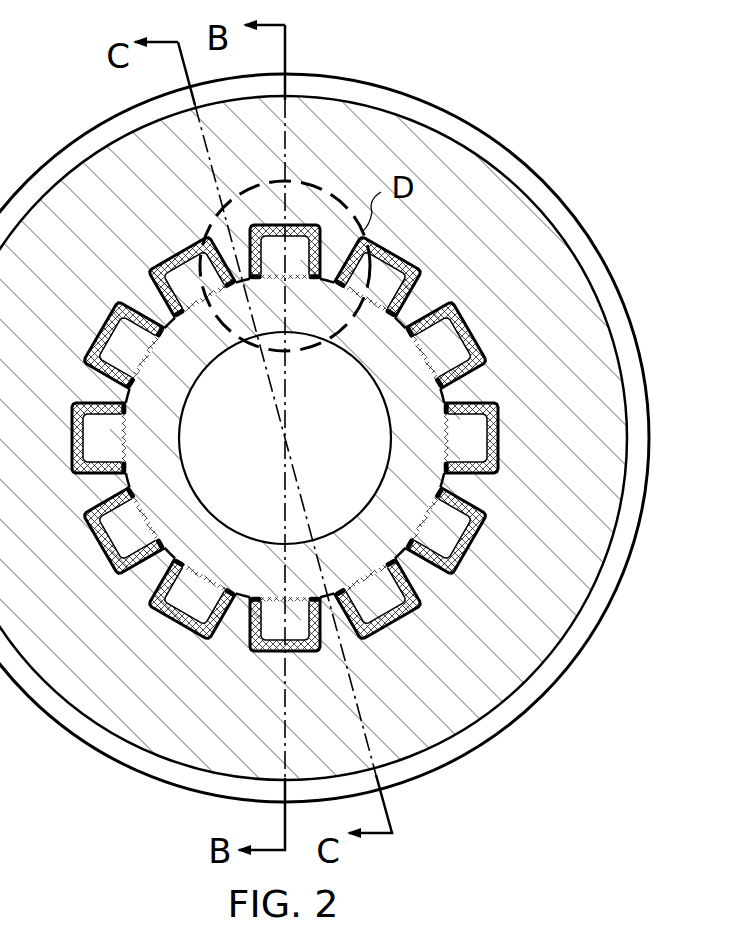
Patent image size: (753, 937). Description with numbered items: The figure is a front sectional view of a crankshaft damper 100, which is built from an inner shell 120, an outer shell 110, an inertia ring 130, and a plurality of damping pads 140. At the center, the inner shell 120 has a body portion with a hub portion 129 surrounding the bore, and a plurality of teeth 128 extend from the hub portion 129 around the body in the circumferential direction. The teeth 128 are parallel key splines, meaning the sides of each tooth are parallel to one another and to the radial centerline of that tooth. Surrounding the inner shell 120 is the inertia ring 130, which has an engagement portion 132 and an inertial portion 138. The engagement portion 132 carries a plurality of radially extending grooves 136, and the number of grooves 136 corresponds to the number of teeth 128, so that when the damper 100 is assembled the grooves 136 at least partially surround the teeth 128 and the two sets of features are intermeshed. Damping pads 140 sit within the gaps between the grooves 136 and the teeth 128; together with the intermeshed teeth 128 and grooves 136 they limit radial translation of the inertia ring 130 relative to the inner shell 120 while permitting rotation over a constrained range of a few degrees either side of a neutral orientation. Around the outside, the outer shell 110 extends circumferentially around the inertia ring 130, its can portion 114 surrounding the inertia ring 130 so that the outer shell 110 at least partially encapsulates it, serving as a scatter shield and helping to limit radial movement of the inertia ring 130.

The damper 100 is at (358, 418).
The outer shell 110 is at (358, 428).
The can portion 114 is at (437, 99).
The inner shell 120 is at (243, 528).
The teeth 128 is at (392, 260).
The hub portion 129 is at (150, 398).
The inertia ring 130 is at (277, 542).
The engagement portion 132 is at (465, 388).
The grooves 136 is at (118, 568).
The inertial portion 138 is at (108, 157).
The damping pads 140 is at (485, 500).